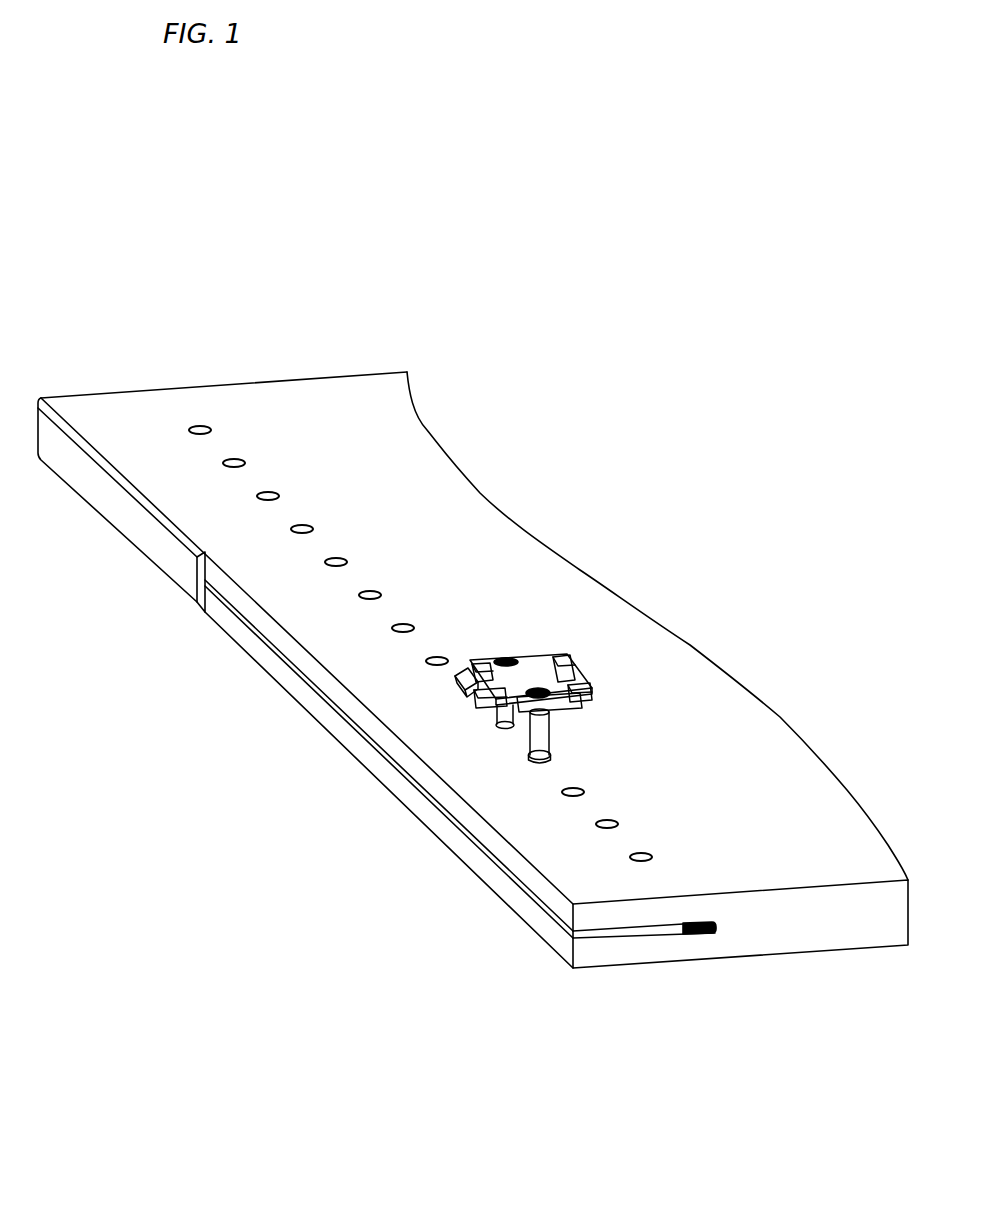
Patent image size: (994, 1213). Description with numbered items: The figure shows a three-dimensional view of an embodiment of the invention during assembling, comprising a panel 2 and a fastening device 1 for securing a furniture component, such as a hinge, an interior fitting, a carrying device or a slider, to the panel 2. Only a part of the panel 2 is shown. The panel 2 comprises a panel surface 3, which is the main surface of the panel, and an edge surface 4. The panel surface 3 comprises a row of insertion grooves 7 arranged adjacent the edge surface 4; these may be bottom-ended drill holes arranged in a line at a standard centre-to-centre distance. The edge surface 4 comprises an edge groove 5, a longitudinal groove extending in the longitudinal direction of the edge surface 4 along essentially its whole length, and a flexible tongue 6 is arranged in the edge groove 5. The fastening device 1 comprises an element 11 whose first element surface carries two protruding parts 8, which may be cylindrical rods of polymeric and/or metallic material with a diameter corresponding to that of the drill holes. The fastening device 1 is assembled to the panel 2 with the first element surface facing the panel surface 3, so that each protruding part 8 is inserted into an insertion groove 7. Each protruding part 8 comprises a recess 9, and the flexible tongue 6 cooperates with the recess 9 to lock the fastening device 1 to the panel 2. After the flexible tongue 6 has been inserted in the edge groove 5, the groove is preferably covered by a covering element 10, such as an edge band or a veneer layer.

The fastening device 1 is at (556, 690).
The panel 2 is at (512, 481).
The panel surface 3 is at (798, 827).
The edge surface 4 is at (482, 833).
The edge groove 5 is at (557, 922).
The flexible tongue 6 is at (697, 936).
The insertion groove 7 is at (528, 755).
The protruding part 8 is at (543, 723).
The recess 9 is at (550, 738).
The covering element 10 is at (163, 548).
The element 11 is at (528, 666).